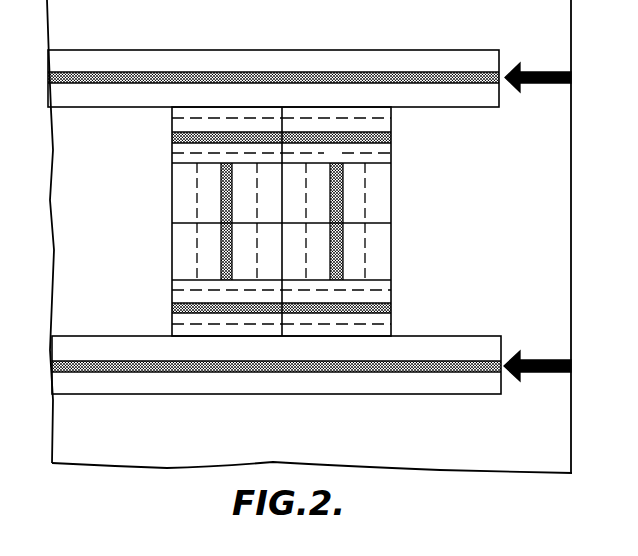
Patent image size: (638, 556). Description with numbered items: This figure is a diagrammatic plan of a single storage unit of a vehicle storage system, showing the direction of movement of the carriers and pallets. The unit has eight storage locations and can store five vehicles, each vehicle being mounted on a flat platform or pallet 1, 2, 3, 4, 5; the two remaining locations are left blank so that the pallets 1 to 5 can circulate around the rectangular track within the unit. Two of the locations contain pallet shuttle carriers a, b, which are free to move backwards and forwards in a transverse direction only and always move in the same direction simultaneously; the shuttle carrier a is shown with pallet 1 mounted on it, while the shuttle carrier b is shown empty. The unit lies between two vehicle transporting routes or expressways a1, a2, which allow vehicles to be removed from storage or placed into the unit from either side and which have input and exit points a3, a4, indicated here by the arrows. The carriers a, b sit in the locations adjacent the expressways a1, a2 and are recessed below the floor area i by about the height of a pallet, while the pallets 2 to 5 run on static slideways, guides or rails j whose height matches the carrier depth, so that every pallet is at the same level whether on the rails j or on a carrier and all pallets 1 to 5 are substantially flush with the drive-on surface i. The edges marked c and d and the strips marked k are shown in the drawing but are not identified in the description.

The expressway a1 is at (298, 63).
The expressway a2 is at (297, 383).
The input and exit point a3 is at (499, 97).
The input and exit point a4 is at (502, 348).
The pallet shuttle carrier a is at (391, 124).
The pallet shuttle carrier b is at (391, 318).
The upper magnetic layer edge c is at (172, 121).
The lower magnetic layer edge d is at (172, 316).
The floor area i is at (555, 220).
The static slideways, guides or rails j is at (257, 238).
The connecting strips k is at (213, 325).
The pallet 1 is at (281, 154).
The pallet 2 is at (335, 193).
The pallet 3 is at (335, 251).
The pallet 4 is at (227, 251).
The pallet 5 is at (227, 193).